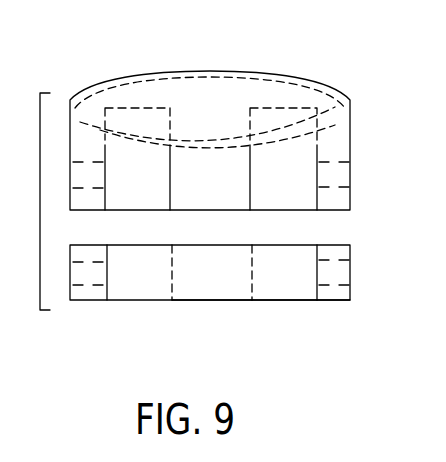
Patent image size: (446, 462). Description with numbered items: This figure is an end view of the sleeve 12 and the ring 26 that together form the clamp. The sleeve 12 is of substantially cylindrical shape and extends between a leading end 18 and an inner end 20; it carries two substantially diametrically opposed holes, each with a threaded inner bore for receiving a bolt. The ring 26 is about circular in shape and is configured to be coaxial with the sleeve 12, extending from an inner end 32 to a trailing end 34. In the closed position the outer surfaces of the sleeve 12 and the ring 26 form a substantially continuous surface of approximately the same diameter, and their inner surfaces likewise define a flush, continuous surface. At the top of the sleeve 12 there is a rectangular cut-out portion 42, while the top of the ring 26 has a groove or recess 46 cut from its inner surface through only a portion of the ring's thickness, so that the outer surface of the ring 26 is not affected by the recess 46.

The sleeve 12 is at (120, 76).
The leading end 18 is at (315, 80).
The inner end 20 is at (333, 210).
The ring 26 is at (281, 301).
The inner end 32 is at (333, 244).
The trailing end 34 is at (333, 301).
The cut-out portion 42 is at (205, 117).
The recess 46 is at (207, 292).